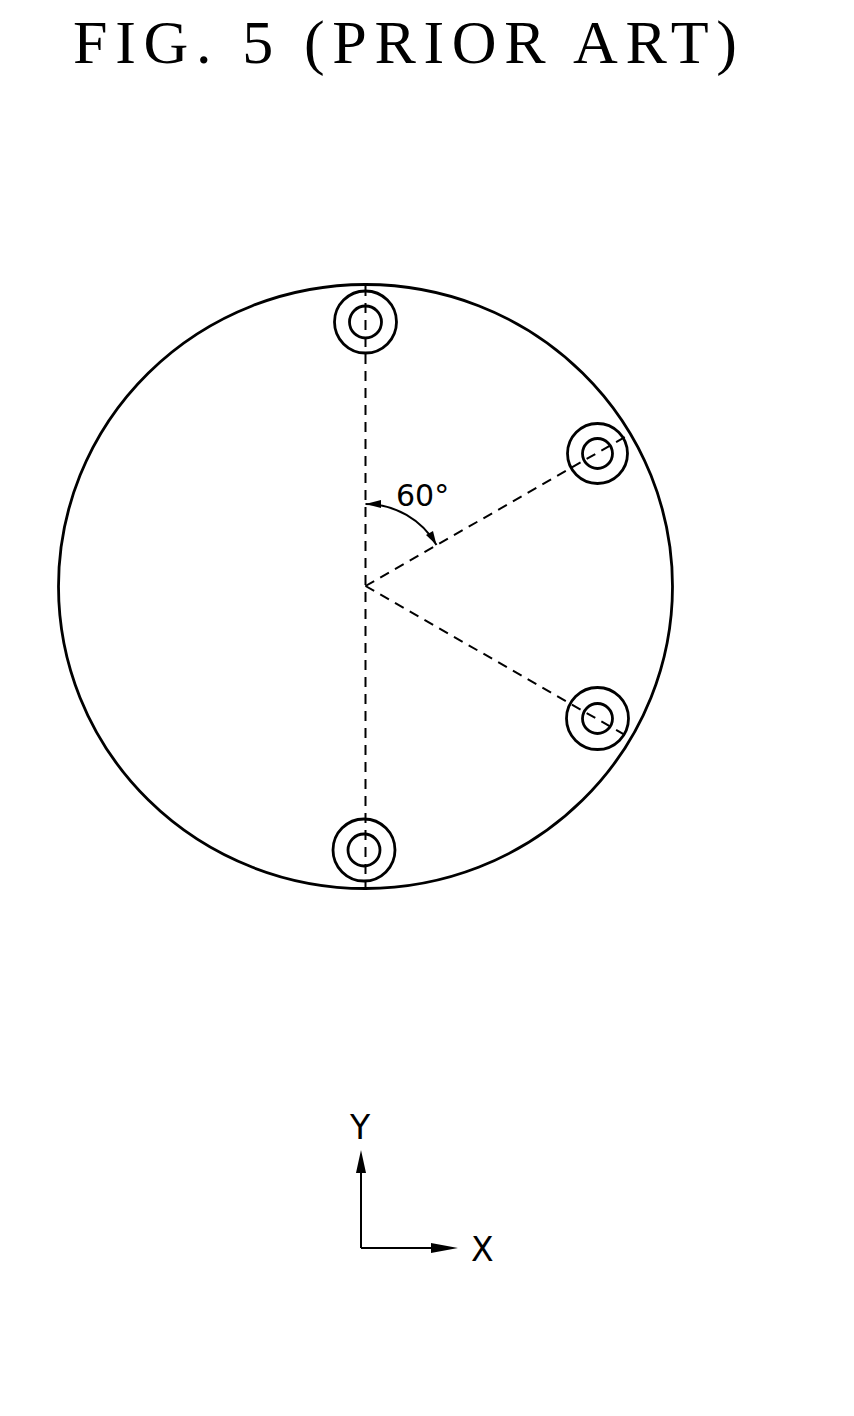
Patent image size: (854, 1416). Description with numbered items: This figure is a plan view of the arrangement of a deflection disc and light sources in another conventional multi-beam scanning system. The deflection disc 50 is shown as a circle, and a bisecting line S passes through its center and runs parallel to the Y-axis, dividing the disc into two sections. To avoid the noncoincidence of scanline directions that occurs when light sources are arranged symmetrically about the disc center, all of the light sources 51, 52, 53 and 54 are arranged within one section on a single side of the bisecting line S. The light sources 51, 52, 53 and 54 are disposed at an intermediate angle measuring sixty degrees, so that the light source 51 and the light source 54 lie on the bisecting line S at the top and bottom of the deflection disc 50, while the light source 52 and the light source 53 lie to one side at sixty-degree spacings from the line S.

The deflection disc 50 is at (168, 380).
The light source 51 is at (390, 303).
The light source 52 is at (621, 434).
The light source 53 is at (628, 714).
The light source 54 is at (380, 878).
The bisecting line S is at (367, 428).